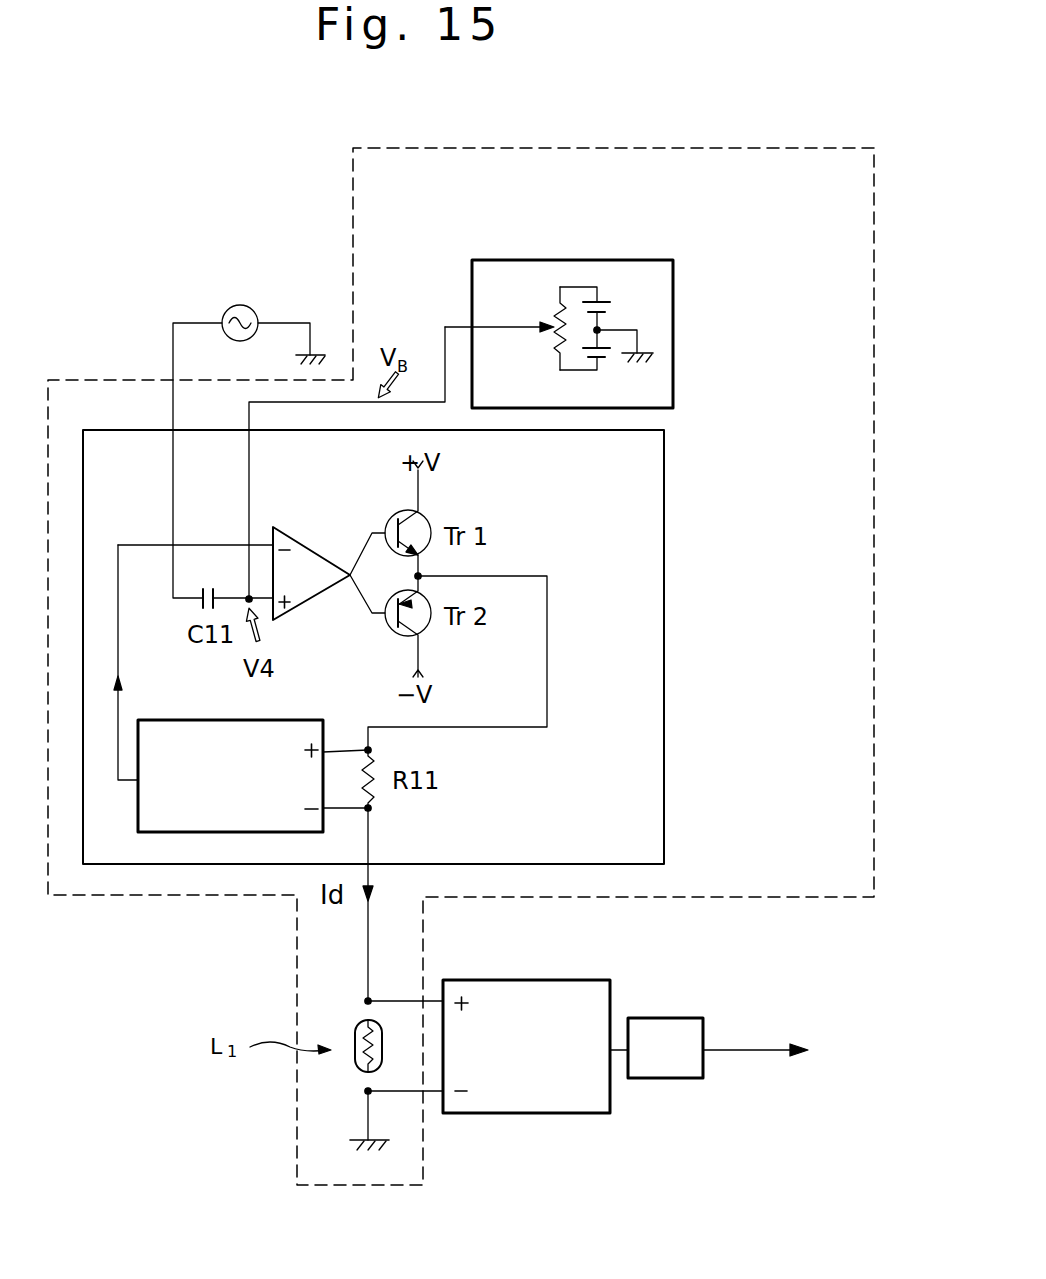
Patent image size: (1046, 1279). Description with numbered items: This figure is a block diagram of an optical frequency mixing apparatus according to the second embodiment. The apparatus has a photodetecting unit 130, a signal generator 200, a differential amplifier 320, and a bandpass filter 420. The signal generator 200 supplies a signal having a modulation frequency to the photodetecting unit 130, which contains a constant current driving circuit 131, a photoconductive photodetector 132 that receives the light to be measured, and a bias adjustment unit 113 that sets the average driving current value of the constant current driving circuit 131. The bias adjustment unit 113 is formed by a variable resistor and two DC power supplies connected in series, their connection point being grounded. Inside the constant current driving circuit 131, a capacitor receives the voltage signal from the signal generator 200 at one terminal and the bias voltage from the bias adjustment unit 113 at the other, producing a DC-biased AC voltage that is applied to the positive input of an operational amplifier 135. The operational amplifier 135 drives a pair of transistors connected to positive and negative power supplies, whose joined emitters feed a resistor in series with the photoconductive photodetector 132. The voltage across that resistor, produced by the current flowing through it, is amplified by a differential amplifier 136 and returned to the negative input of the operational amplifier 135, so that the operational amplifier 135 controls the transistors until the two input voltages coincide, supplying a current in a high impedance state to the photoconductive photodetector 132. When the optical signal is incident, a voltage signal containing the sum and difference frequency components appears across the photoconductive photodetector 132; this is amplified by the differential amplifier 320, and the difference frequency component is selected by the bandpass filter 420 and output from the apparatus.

The photodetecting unit 130 is at (790, 150).
The constant current driving circuit 131 is at (664, 537).
The bias adjustment unit 113 is at (673, 307).
The signal generator 200 is at (246, 306).
The operational amplifier 135 is at (300, 540).
The differential amplifier 136 is at (162, 718).
The photoconductive photodetector 132 is at (360, 1023).
The differential amplifier 320 is at (520, 1117).
The bandpass filter 420 is at (680, 1080).